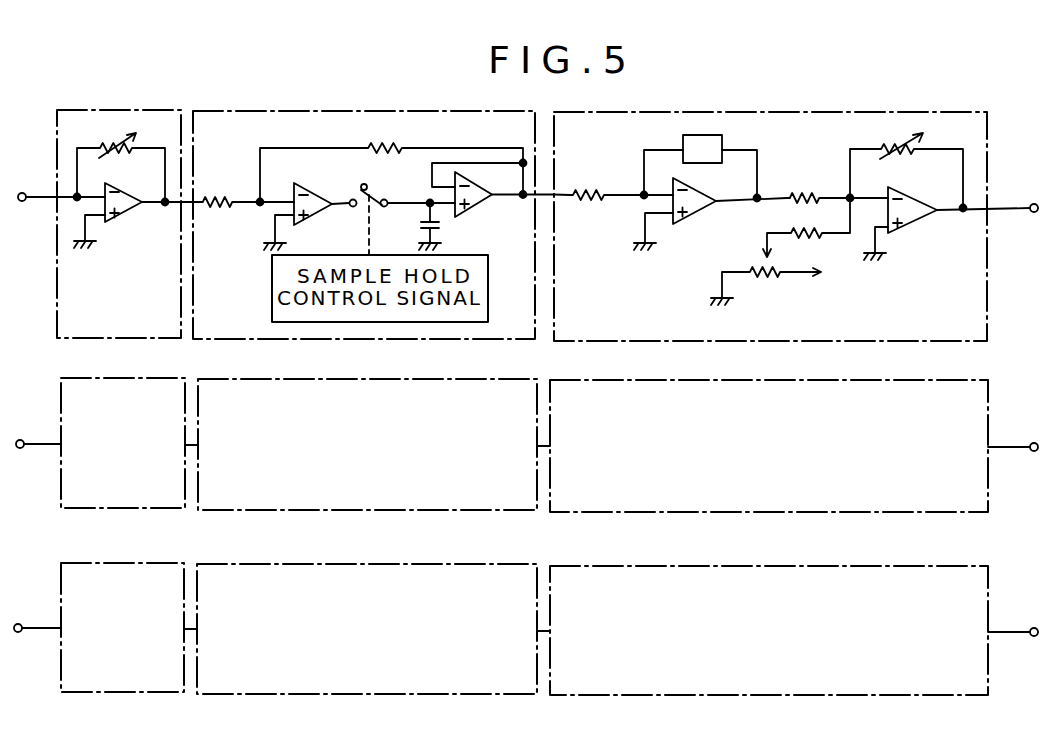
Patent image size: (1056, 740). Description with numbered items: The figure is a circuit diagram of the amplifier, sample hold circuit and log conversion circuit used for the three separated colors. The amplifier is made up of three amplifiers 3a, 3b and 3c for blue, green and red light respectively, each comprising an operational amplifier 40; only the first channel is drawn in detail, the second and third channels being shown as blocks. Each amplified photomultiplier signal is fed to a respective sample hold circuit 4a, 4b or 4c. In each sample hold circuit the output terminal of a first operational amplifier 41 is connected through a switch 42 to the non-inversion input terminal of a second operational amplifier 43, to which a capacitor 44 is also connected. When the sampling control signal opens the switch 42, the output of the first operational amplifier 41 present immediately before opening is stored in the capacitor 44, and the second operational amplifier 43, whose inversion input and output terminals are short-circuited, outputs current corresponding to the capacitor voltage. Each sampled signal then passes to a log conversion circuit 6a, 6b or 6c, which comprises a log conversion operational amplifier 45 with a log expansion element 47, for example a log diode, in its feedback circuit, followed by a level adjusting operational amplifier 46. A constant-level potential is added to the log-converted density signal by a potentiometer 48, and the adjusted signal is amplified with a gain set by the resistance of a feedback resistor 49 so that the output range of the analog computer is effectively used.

The amplifier 3a is at (137, 110).
The sample hold circuit 4a is at (418, 111).
The log conversion circuit 6a is at (872, 112).
The amplifier 3b is at (136, 378).
The sample hold circuit 4b is at (458, 379).
The log conversion circuit 6b is at (884, 381).
The amplifier 3c is at (129, 563).
The sample hold circuit 4c is at (469, 564).
The log conversion circuit 6c is at (897, 566).
The operational amplifier 40 is at (124, 219).
The first operational amplifier 41 is at (311, 221).
The switch 42 is at (372, 193).
The second operational amplifier 43 is at (469, 211).
The capacitor 44 is at (420, 225).
The log conversion operational amplifier 45 is at (693, 216).
The level adjusting operational amplifier 46 is at (911, 227).
The log expansion element 47 is at (722, 141).
The potentiometer 48 is at (766, 277).
The feedback resistor 49 is at (893, 140).